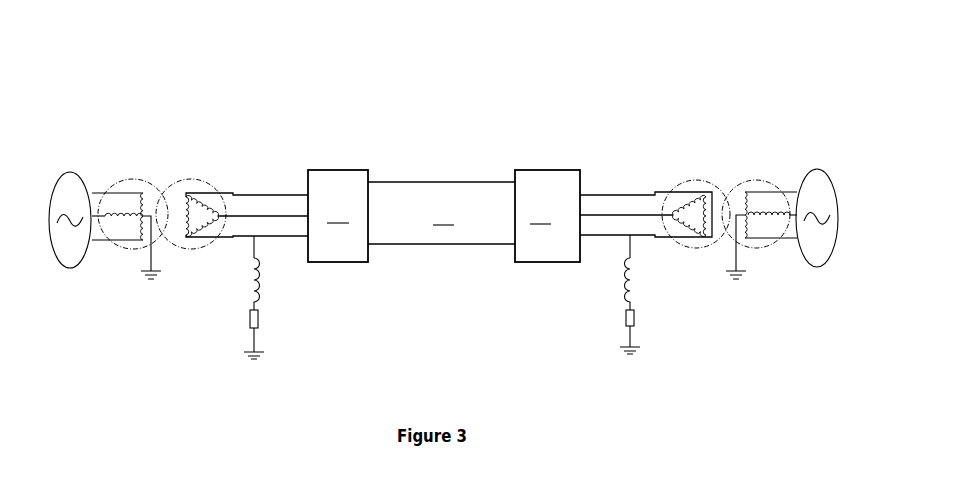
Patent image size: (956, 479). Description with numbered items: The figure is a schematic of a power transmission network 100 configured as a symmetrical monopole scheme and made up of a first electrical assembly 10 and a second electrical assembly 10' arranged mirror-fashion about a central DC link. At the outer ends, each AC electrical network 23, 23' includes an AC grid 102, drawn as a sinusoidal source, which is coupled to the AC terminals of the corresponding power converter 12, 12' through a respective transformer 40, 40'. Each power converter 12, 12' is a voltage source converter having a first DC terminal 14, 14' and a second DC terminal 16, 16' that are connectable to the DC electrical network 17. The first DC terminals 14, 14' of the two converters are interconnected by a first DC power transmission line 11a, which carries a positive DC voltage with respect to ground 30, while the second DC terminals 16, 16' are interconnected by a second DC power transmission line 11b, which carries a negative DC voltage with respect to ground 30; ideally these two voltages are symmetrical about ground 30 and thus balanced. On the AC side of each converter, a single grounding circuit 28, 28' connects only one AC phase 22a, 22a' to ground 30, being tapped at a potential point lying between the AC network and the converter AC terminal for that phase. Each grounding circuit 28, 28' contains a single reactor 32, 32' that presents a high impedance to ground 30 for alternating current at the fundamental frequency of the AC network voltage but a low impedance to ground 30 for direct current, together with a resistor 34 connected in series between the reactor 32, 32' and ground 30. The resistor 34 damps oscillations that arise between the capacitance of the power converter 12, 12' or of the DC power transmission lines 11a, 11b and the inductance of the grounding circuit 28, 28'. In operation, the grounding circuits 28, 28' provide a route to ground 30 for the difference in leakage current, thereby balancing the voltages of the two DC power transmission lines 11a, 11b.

The power transmission network 100 is at (74, 69).
The first electrical assembly 10 is at (252, 106).
The second electrical assembly 10' is at (614, 101).
The AC grid 102 is at (63, 266).
The transformer 40 is at (159, 207).
The transformer 40' is at (729, 207).
The three-phase AC electrical network 23 is at (247, 182).
The AC electrical network 23' is at (646, 183).
The AC phase 22a is at (303, 260).
The AC phase 22a' is at (583, 260).
The power converter 12 is at (338, 216).
The power converter 12' is at (547, 216).
The first DC terminal 14 is at (371, 144).
The first DC terminal 14' is at (517, 142).
The second DC terminal 16 is at (369, 285).
The second DC terminal 16' is at (509, 288).
The DC electrical network 17 is at (443, 215).
The first DC power transmission line 11a is at (455, 181).
The second DC power transmission line 11b is at (455, 247).
The grounding circuit 28 is at (225, 268).
The grounding circuit 28' is at (661, 266).
The reactor 32 is at (281, 285).
The reactor 32' is at (601, 286).
The resistor 34 is at (258, 322).
The ground 30 is at (262, 353).